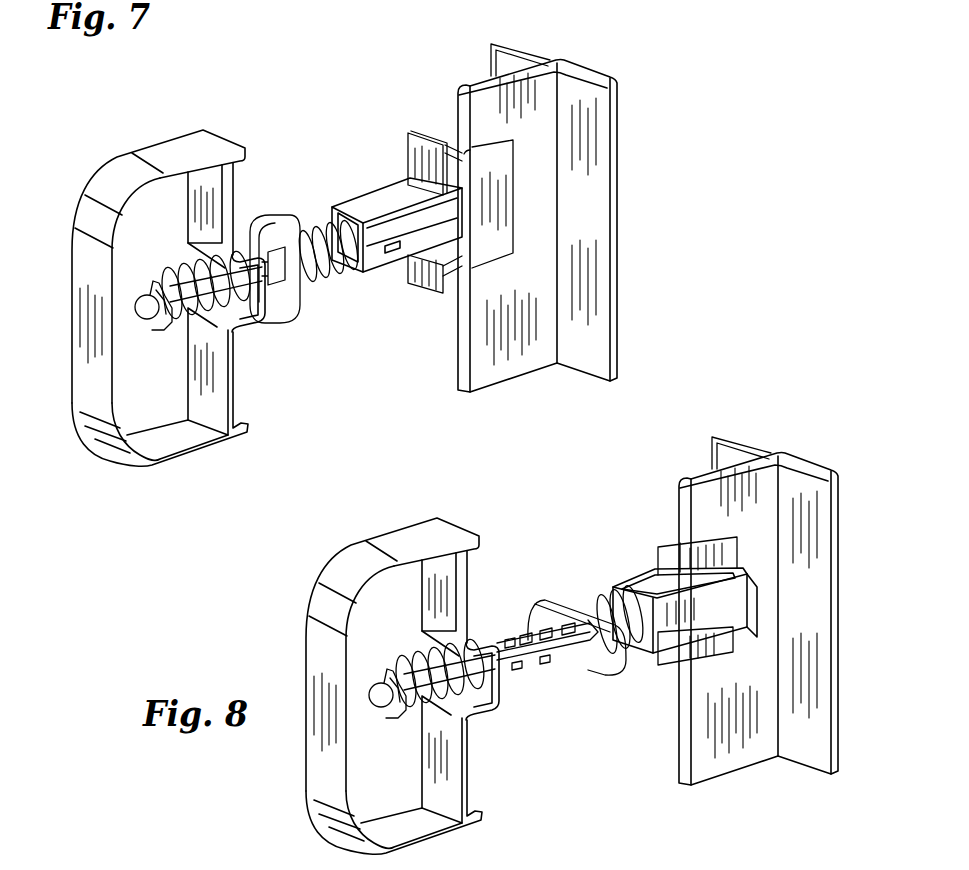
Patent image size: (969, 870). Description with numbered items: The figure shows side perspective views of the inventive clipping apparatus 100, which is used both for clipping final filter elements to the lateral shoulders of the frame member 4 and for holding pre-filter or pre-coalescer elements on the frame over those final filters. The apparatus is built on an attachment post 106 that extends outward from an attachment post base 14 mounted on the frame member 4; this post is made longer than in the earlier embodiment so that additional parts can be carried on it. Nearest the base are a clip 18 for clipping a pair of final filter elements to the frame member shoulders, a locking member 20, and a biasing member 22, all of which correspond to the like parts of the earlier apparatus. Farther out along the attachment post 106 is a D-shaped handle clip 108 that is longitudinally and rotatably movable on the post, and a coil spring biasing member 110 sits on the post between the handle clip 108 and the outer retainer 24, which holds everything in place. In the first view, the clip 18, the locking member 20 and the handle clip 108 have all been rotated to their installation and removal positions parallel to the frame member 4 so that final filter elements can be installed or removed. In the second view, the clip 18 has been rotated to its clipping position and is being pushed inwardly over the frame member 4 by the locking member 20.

In FIG. 7, the frame member 4 is at (592, 208).
In FIG. 8, the frame member 4 is at (795, 740).
In FIG. 7, the attachment post base 14 is at (507, 167).
In FIG. 8, the attachment post base 14 is at (722, 552).
In FIG. 7, the clip 18 is at (370, 203).
In FIG. 8, the clip 18 is at (613, 583).
In FIG. 7, the locking member 20 is at (275, 232).
In FIG. 8, the locking member 20 is at (537, 598).
In FIG. 7, the biasing member 22 is at (318, 282).
In FIG. 8, the biasing member 22 is at (637, 653).
In FIG. 7, the retainer 24 is at (168, 330).
In FIG. 8, the retainer 24 is at (387, 726).
In FIG. 7, the clipping apparatus 100 is at (392, 94).
In FIG. 8, the clipping apparatus 100 is at (640, 516).
In FIG. 7, the attachment post 106 is at (227, 298).
In FIG. 8, the attachment post 106 is at (463, 688).
In FIG. 7, the handle clip 108 is at (112, 192).
In FIG. 8, the handle clip 108 is at (395, 669).
In FIG. 7, the biasing member 110 is at (168, 275).
In FIG. 8, the biasing member 110 is at (429, 656).